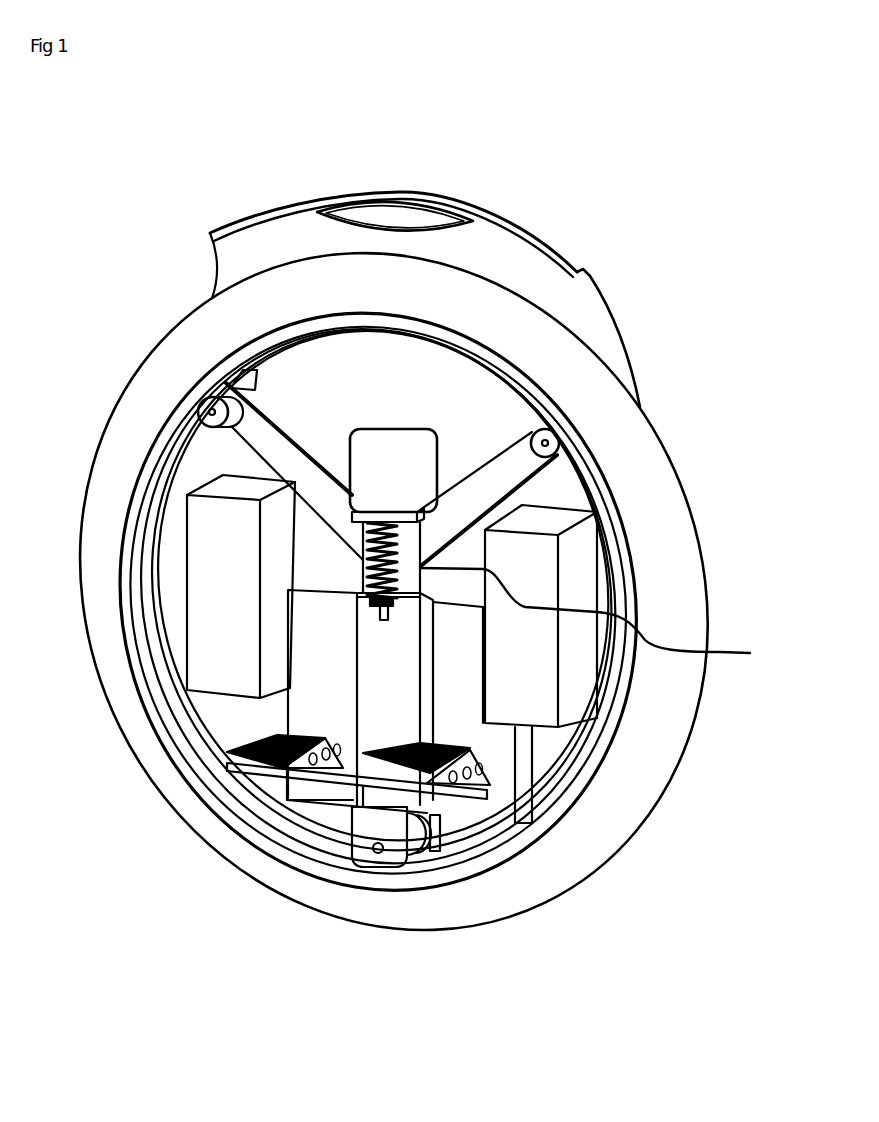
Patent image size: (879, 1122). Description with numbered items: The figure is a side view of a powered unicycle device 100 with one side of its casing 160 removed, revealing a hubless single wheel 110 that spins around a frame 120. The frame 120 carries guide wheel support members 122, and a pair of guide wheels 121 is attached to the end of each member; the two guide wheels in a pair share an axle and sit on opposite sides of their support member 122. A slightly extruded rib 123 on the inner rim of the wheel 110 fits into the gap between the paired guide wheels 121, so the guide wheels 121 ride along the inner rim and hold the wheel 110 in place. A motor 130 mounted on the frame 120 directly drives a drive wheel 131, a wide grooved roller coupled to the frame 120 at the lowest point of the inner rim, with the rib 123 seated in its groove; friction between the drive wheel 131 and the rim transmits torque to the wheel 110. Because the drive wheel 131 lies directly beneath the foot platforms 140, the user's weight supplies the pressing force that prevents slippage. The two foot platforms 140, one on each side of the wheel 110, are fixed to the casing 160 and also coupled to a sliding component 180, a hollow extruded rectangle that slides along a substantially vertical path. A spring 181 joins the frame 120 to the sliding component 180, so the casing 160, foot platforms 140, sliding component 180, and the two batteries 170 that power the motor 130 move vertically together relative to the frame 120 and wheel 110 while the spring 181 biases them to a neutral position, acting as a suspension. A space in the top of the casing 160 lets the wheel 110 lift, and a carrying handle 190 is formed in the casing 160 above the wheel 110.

The powered unicycle device 100 is at (635, 198).
The wheel 110 is at (426, 300).
The frame 120 is at (318, 565).
The guide wheels 121 is at (240, 361).
The guide wheel support members 122 is at (328, 487).
The rib 123 is at (165, 656).
The motor 130 is at (406, 472).
The drive wheel 131 is at (434, 858).
The foot platforms 140 is at (328, 777).
The casing 160 is at (425, 299).
The batteries 170 is at (234, 552).
The sliding component 180 is at (405, 670).
The spring 181 is at (603, 617).
The carrying handle 190 is at (387, 222).